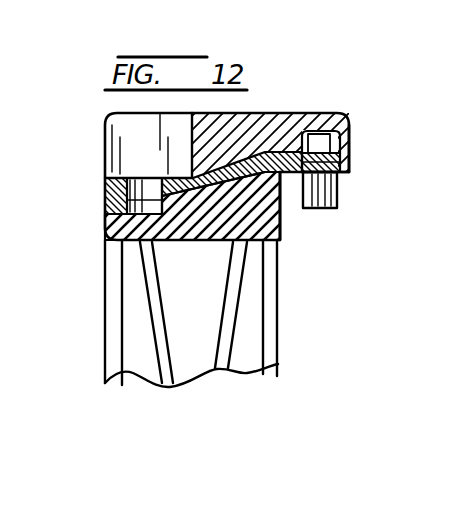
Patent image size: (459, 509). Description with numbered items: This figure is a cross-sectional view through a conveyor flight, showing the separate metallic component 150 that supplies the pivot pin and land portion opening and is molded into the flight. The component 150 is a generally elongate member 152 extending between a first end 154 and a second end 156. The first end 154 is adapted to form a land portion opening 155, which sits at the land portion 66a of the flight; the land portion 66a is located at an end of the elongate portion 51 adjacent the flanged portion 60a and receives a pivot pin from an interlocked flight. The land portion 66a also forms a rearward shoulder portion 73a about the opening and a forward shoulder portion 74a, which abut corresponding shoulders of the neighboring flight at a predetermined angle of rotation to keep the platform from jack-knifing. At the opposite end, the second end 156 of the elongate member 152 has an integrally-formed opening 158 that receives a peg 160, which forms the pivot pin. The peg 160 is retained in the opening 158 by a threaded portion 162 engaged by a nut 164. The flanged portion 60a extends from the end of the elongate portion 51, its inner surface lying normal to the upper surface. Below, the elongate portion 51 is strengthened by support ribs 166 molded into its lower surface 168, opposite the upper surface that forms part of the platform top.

The separate component 150 is at (303, 221).
The elongate member 152 is at (277, 155).
The land portion opening 155 is at (106, 244).
The integrally-formed opening 158 is at (296, 156).
The first end 154 is at (110, 192).
The land portion 66a is at (135, 128).
The rearward shoulder portion 73a is at (106, 216).
The nut 164 is at (338, 130).
The threaded portion 162 is at (347, 157).
The second end 156 is at (346, 171).
The flanged portion 60a is at (350, 138).
The peg 160 is at (338, 210).
The forward shoulder portion 74a is at (282, 224).
The elongate portion 51 is at (105, 357).
The support ribs 166 is at (193, 352).
The lower surface 168 is at (247, 357).